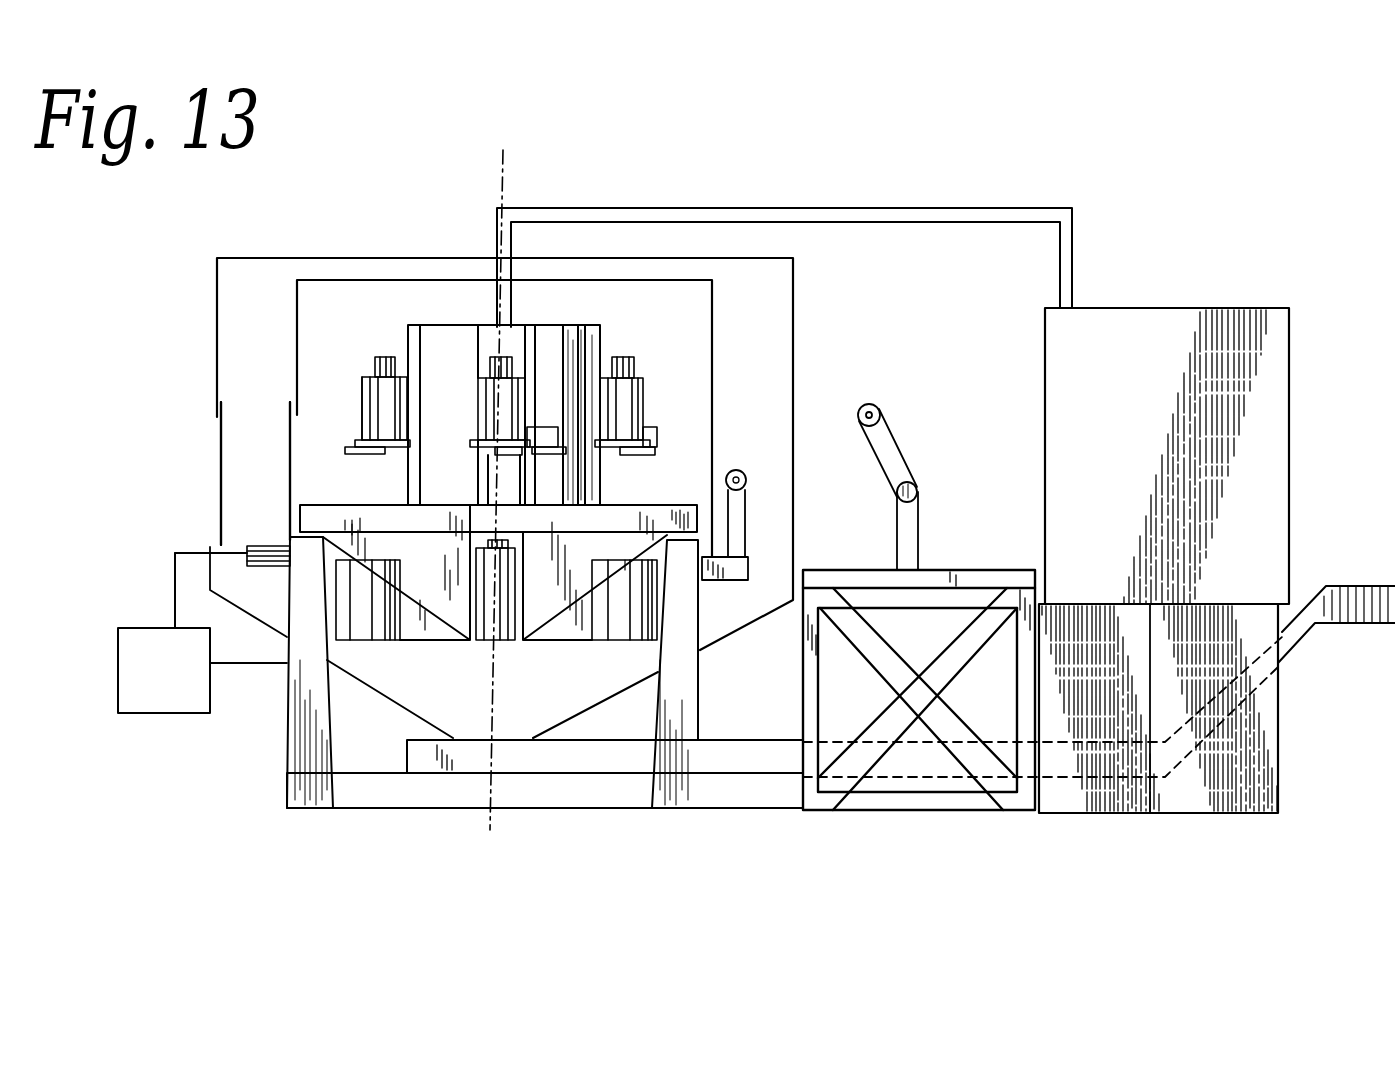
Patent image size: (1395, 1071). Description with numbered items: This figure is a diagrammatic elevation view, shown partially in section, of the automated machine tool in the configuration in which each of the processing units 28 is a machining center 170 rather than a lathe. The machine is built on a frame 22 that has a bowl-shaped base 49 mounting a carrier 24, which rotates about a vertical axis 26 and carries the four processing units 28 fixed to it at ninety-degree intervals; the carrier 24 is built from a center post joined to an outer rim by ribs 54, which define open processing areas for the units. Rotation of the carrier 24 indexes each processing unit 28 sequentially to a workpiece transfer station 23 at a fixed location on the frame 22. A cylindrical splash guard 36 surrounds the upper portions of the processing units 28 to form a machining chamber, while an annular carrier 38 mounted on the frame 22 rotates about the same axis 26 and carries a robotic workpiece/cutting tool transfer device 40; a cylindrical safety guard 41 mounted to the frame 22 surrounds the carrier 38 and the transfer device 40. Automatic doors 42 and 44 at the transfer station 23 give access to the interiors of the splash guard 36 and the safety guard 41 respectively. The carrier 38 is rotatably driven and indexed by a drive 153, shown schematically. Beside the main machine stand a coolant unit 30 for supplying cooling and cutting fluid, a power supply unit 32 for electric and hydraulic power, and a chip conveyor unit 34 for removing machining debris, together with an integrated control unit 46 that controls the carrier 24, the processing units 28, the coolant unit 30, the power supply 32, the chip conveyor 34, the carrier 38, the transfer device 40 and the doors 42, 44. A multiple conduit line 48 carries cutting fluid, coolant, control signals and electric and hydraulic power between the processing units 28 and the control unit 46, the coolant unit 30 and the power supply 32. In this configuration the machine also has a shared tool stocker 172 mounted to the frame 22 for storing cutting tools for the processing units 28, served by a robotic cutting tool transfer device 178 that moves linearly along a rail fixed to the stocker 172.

The frame 22 is at (772, 812).
The workpiece transfer station 23 is at (277, 509).
The carrier 24 is at (650, 503).
The vertical axis 26 is at (513, 166).
The processing units 28 is at (420, 325).
The coolant unit 30 is at (1195, 800).
The power supply unit 32 is at (1073, 790).
The chip conveyor unit 34 is at (1368, 630).
The splash guard 36 is at (355, 280).
The carrier 38 is at (740, 580).
The workpiece/cutting tool transfer device 40 is at (748, 480).
The safety guard 41 is at (297, 258).
The automatic door 42 is at (288, 450).
The automatic door 44 is at (220, 517).
The control unit 46 is at (1155, 308).
The multiple conduit line 48 is at (925, 208).
The bowl-shaped base 49 is at (290, 805).
The ribs 54 is at (415, 556).
The drive 153 is at (164, 633).
The machining center 170 is at (362, 390).
The tool stocker 172 is at (970, 570).
The cutting tool transfer device 178 is at (890, 428).